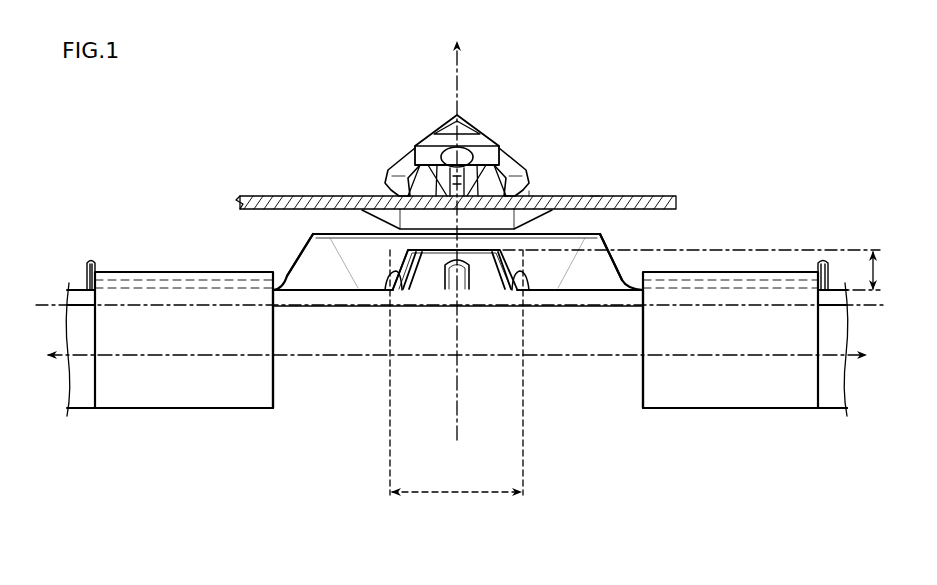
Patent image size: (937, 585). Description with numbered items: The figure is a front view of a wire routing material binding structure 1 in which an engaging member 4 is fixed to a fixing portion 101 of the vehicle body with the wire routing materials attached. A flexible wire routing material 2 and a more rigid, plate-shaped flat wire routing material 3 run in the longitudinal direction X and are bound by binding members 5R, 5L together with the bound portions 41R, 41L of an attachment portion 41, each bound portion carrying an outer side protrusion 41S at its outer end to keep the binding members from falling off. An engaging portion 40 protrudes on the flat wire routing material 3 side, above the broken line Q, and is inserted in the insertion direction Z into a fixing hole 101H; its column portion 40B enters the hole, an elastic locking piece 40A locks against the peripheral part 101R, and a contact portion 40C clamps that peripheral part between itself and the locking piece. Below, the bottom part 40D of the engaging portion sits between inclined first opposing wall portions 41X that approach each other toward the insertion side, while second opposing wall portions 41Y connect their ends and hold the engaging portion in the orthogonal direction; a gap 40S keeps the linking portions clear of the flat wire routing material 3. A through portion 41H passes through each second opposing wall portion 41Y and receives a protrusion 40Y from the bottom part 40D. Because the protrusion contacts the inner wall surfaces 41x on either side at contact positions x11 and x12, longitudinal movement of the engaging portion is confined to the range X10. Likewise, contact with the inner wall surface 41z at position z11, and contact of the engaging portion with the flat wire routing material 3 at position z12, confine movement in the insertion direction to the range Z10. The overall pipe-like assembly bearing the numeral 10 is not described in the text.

The wire routing material binding structure 1 is at (267, 177).
The flexible wire routing material 2 is at (833, 410).
The flat wire routing material 3 is at (836, 279).
The engaging member 4 is at (495, 138).
The binding member 5L is at (127, 271).
The binding member 5R is at (766, 271).
The pipe assembly 10 is at (678, 80).
The engaging portion 40 is at (459, 123).
The elastic locking piece 40A is at (393, 173).
The column portion 40B is at (469, 150).
The contact portion 40C is at (554, 214).
The bottom part 40D is at (487, 284).
The gap 40S is at (413, 292).
The protrusion 40Y is at (451, 282).
The attachment portion 41 is at (441, 313).
The through portion 41H is at (401, 255).
The bound portion 41L is at (180, 271).
The bound portion 41R is at (716, 285).
The outer side protrusion 41S is at (90, 260).
The first opposing wall portion 41X is at (300, 262).
The second opposing wall portion 41Y is at (333, 277).
The inner wall surface 41x is at (398, 277).
The inner wall surface 41z is at (521, 261).
The fixing portion 101 is at (674, 192).
The fixing hole 101H is at (532, 194).
The peripheral part 101R is at (594, 197).
The broken line Q is at (48, 302).
The longitudinal direction X is at (80, 362).
The predetermined range X10 is at (452, 496).
The contact position x11 is at (520, 387).
The contact position x12 is at (394, 387).
The insertion direction Z is at (478, 226).
The predetermined range Z10 is at (874, 250).
The contact position z11 is at (705, 252).
The contact position z12 is at (880, 292).